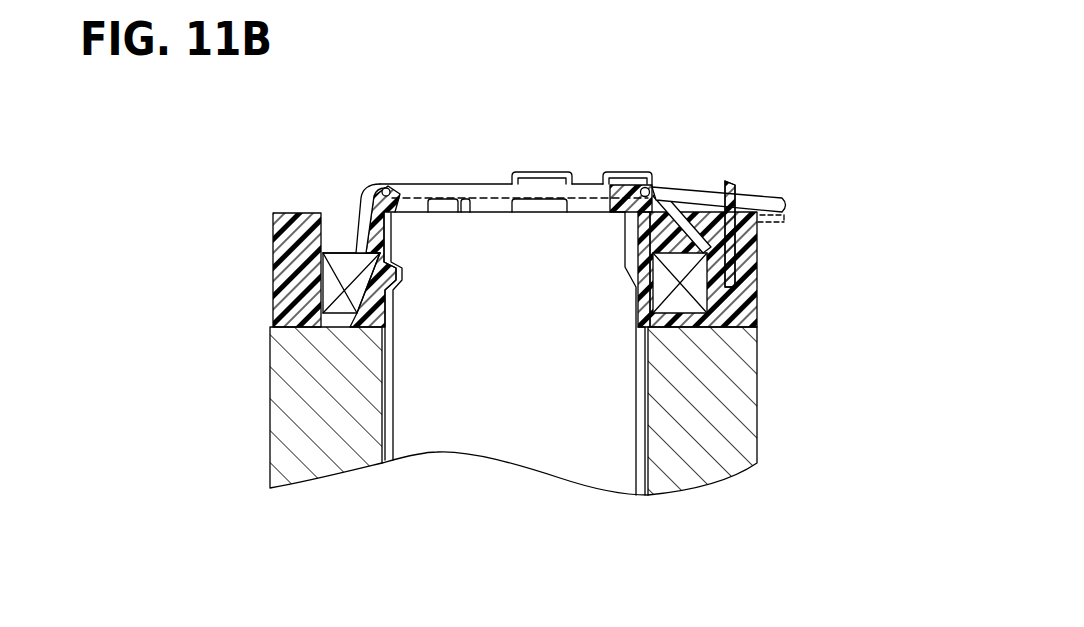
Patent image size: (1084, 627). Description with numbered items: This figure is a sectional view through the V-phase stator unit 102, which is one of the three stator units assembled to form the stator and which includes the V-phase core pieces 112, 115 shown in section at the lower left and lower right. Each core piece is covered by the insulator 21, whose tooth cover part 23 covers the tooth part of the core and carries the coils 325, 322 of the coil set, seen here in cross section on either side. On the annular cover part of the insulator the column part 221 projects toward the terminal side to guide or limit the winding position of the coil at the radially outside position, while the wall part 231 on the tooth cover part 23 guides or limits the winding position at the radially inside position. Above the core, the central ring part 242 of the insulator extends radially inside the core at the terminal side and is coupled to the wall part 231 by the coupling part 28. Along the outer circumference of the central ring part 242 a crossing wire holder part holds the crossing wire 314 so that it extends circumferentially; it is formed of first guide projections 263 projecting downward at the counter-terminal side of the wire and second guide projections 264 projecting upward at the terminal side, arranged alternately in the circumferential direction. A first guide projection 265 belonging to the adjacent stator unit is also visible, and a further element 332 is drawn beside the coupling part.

The stator unit 102 is at (862, 142).
The insulator 21 is at (268, 212).
The column part 221 is at (300, 236).
The coil 325 is at (330, 290).
The tooth cover part 23 is at (352, 320).
The wall part 231 is at (372, 242).
The V-phase core piece 115 is at (290, 407).
The central ring part 242 is at (462, 152).
The crossing wire 314 is at (534, 200).
The first guide projection 263 is at (478, 206).
The second guide projection 264 is at (540, 178).
The first guide projection 265 is at (642, 178).
The coupling part 28 is at (633, 213).
The V-phase core piece 112 is at (748, 402).
The coil 322 is at (690, 297).
The lever pin 332 is at (736, 186).